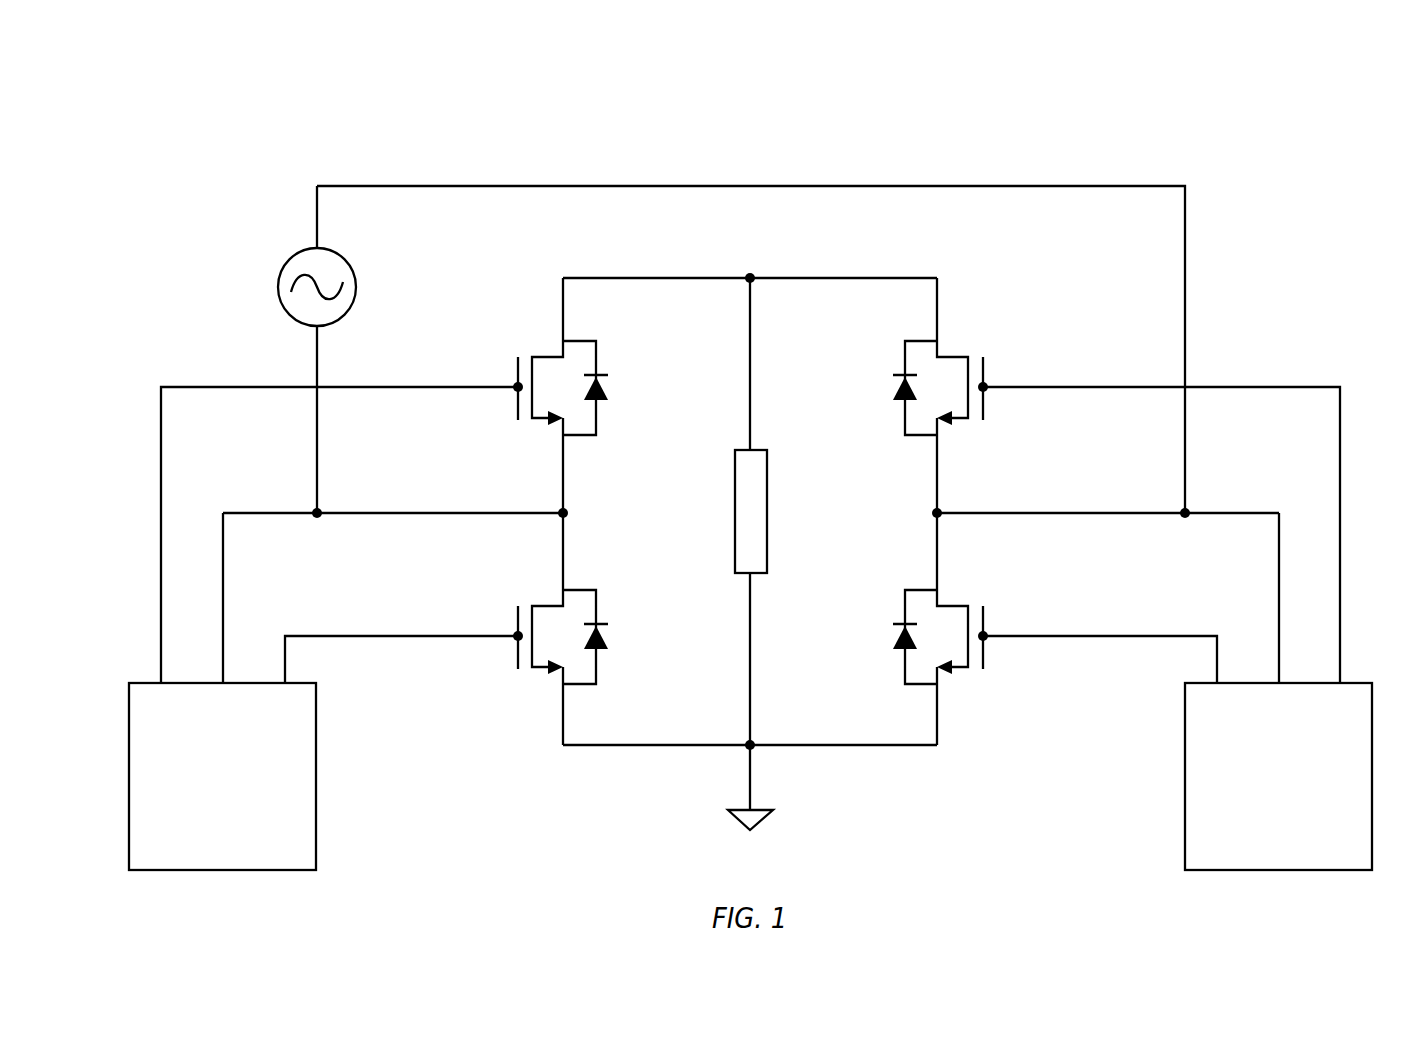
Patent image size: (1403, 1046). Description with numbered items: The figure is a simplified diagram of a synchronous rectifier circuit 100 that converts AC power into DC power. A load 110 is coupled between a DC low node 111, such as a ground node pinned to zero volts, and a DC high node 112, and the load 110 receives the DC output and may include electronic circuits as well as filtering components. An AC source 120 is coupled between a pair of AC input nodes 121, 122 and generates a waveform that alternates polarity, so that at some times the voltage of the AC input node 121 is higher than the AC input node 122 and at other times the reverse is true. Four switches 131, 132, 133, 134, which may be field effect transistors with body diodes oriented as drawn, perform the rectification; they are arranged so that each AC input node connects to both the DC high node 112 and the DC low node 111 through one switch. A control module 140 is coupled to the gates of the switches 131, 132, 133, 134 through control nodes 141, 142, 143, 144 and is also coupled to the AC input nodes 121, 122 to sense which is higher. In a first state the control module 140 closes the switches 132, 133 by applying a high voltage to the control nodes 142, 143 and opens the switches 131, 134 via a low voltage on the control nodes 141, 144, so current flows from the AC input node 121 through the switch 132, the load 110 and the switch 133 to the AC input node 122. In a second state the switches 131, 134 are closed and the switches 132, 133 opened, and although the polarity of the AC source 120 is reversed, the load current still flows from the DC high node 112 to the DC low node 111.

The synchronous rectifier circuit 100 is at (212, 118).
The load 110 is at (735, 432).
The DC low node 111 is at (737, 725).
The DC high node 112 is at (737, 257).
The AC source 120 is at (288, 243).
The AC input node 121 is at (475, 492).
The AC input node 122 is at (1095, 492).
The switch 131 is at (551, 575).
The switch 132 is at (921, 575).
The switch 133 is at (551, 322).
The switch 134 is at (925, 322).
The control module 140 is at (243, 805).
The control node 141 is at (410, 617).
The control node 142 is at (1155, 617).
The control node 143 is at (256, 368).
The control node 144 is at (1313, 368).